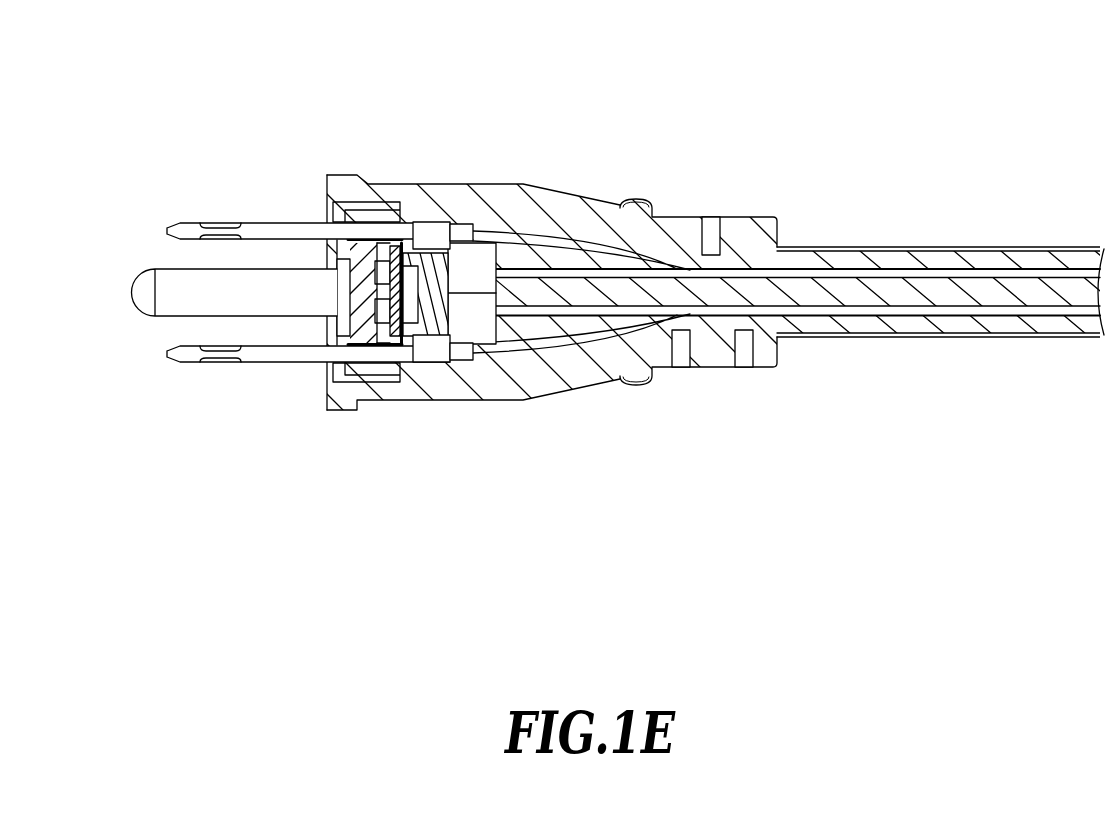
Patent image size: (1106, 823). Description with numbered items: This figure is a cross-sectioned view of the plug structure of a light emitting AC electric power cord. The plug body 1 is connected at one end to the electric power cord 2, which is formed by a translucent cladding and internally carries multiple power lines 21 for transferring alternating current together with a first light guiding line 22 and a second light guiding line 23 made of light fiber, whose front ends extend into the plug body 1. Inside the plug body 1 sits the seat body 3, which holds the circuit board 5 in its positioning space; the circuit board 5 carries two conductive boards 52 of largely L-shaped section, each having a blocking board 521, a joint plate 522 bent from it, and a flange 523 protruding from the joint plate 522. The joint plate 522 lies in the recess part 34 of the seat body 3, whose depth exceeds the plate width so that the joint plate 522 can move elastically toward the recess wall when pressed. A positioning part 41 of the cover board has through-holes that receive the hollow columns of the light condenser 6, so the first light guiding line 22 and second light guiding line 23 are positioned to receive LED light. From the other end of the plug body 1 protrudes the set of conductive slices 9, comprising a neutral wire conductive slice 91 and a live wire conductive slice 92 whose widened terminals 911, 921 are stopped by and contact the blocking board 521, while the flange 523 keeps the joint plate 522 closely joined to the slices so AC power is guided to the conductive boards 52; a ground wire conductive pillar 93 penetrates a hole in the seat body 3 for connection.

The plug body 1 is at (667, 378).
The electric power cord 2 is at (799, 342).
The power lines 21 is at (557, 238).
The first light guiding line 22 is at (877, 272).
The second light guiding line 23 is at (845, 311).
The seat body 3 is at (358, 305).
The recess part 34 is at (400, 325).
The circuit board 5 is at (383, 337).
The conductive boards 52 is at (394, 181).
The blocking board 521 is at (407, 240).
The joint plate 522 is at (390, 240).
The flange 523 is at (377, 240).
The light condenser 6 is at (411, 295).
The positioning part 41 is at (470, 273).
The set of conductive slices 9 is at (283, 293).
The neutral wire conductive slice 91 is at (320, 412).
The terminal 911 is at (433, 350).
The live wire conductive slice 92 is at (303, 144).
The terminal 921 is at (433, 223).
The ground wire conductive pillar 93 is at (133, 298).